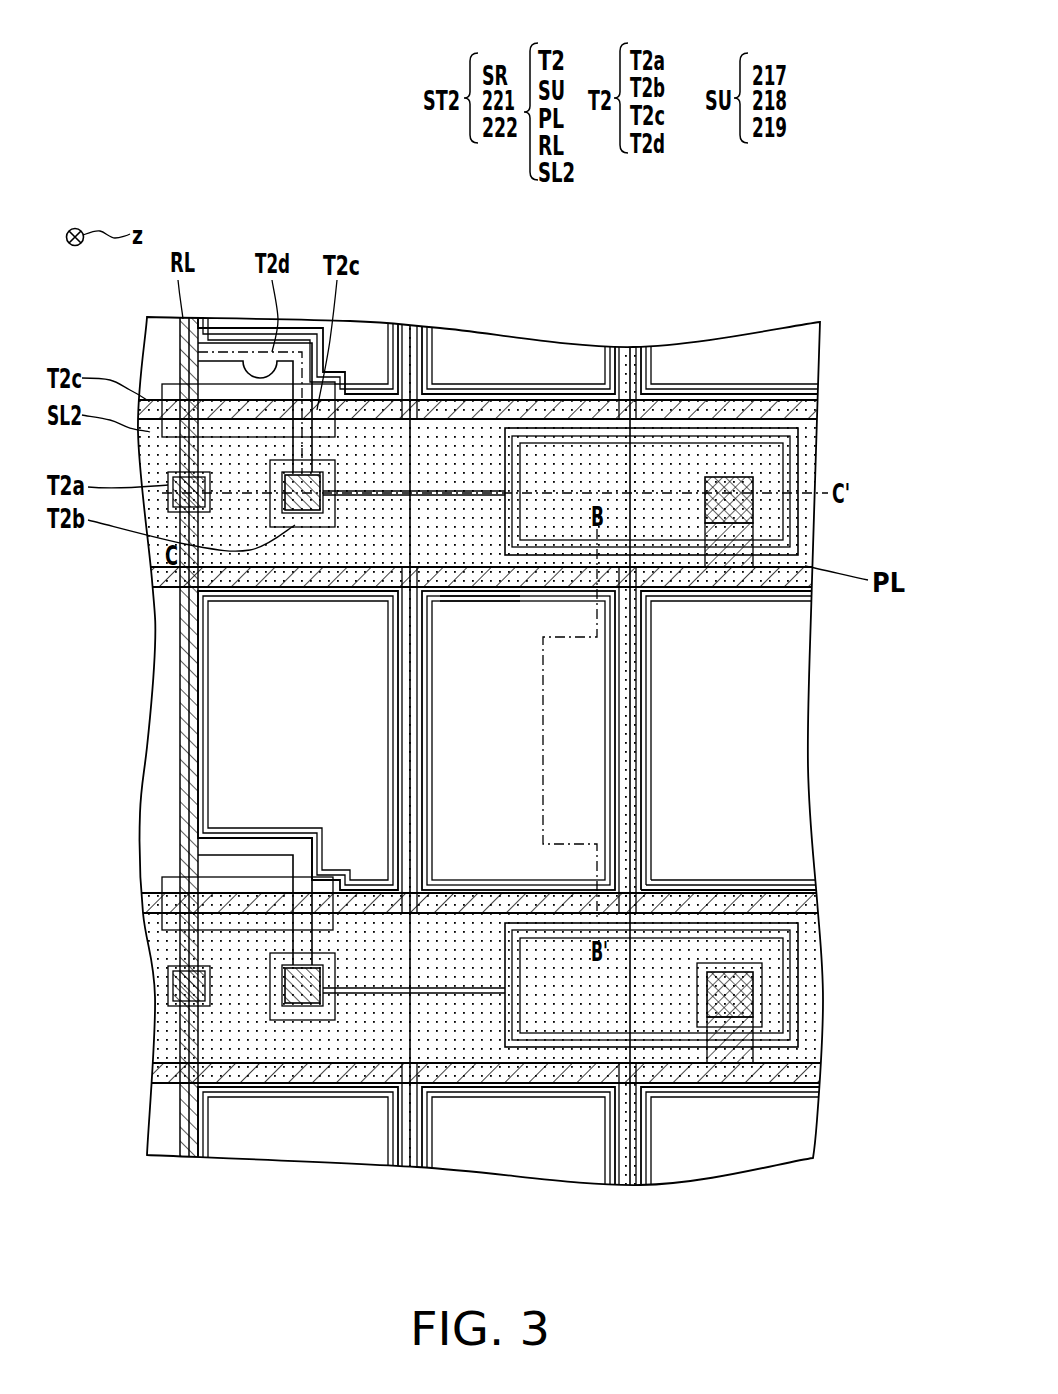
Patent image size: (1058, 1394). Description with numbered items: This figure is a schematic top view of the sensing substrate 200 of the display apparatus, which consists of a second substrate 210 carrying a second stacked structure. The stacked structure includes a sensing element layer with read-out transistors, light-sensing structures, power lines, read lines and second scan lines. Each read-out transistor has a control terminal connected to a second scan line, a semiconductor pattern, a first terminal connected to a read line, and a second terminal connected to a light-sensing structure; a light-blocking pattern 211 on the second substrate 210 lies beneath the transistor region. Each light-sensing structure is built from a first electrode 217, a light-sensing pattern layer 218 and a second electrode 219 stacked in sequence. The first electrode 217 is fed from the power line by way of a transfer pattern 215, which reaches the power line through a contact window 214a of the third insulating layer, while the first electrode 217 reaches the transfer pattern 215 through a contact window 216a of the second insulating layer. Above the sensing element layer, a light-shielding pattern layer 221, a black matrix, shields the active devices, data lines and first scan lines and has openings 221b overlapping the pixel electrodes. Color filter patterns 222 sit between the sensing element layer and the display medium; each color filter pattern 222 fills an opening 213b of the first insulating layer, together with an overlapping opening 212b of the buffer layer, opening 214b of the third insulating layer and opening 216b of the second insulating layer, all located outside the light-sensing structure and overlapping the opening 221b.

The sensing substrate 200 is at (526, 769).
The second substrate 210 is at (820, 1120).
The light-blocking pattern 211 is at (172, 384).
The transfer pattern 215 is at (733, 477).
The first electrode 217 is at (592, 443).
The light-sensing pattern layer 218 is at (530, 427).
The second electrode 219 is at (552, 435).
The light-shielding pattern layer 221 is at (462, 453).
The color filter pattern 222 is at (468, 745).
The opening of the light-shielding pattern layer 221b is at (478, 590).
The opening of the buffer layer 212b is at (275, 648).
The opening of the first insulating layer 213b is at (275, 648).
The opening of the third insulating layer 214b is at (493, 593).
The opening of the second insulating layer 216b is at (508, 600).
The contact window of the second insulating layer 216a is at (812, 780).
The contact window of the third insulating layer 214a is at (752, 500).